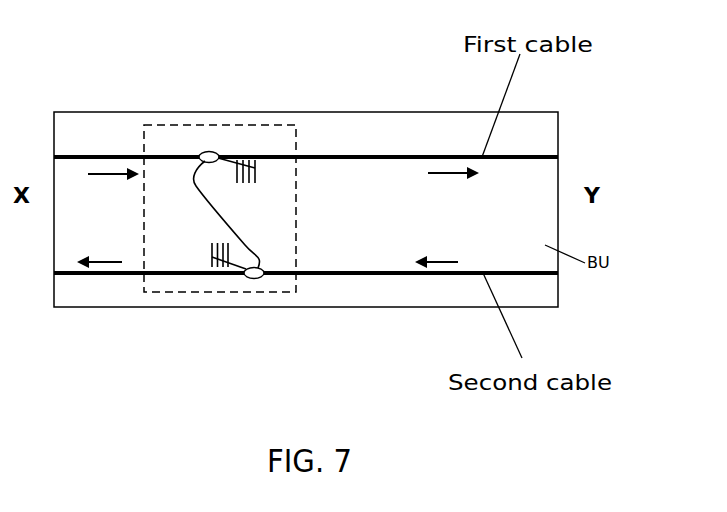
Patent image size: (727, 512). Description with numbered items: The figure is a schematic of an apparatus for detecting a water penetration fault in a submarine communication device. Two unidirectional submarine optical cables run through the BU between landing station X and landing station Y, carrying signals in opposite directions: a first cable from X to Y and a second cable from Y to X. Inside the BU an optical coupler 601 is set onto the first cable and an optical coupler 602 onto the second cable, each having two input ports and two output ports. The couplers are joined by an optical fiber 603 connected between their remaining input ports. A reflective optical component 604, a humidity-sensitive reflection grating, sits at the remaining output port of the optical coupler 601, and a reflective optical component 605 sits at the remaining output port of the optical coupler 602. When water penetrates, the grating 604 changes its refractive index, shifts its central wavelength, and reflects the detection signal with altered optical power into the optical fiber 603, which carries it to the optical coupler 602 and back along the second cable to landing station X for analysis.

The optical coupler 601 is at (211, 152).
The optical coupler 602 is at (253, 278).
The optical fiber 603 is at (195, 186).
The reflective optical component 604 is at (257, 167).
The reflective optical component 605 is at (213, 257).